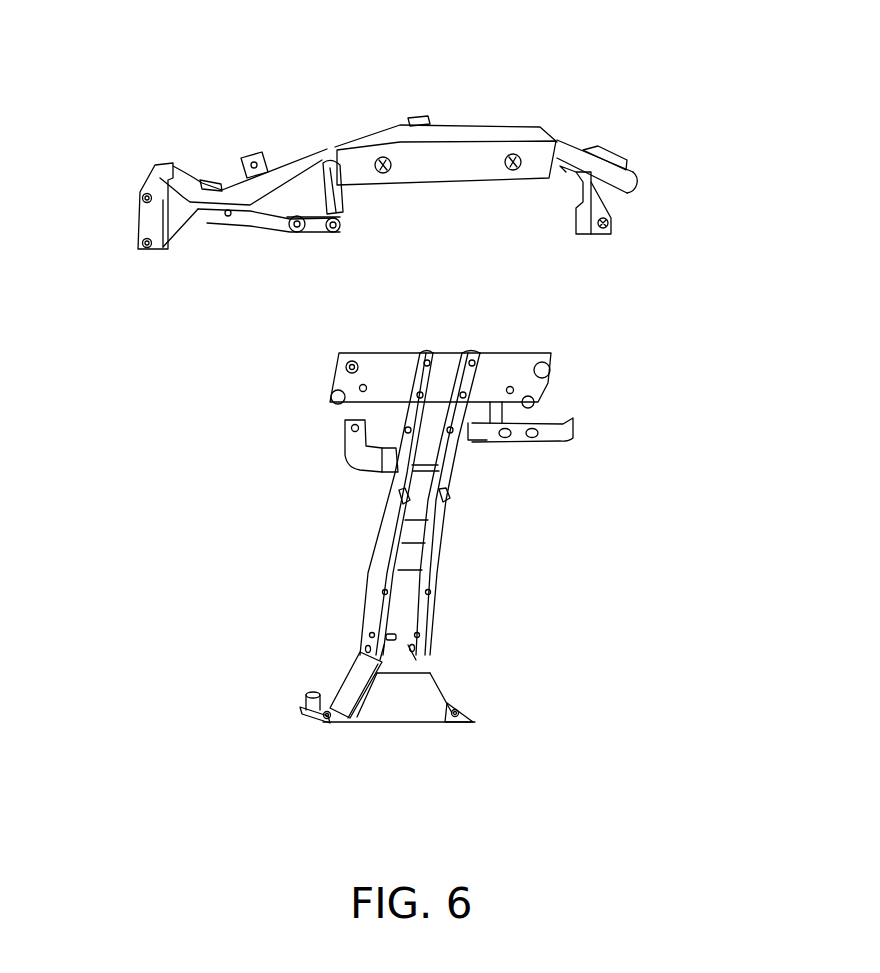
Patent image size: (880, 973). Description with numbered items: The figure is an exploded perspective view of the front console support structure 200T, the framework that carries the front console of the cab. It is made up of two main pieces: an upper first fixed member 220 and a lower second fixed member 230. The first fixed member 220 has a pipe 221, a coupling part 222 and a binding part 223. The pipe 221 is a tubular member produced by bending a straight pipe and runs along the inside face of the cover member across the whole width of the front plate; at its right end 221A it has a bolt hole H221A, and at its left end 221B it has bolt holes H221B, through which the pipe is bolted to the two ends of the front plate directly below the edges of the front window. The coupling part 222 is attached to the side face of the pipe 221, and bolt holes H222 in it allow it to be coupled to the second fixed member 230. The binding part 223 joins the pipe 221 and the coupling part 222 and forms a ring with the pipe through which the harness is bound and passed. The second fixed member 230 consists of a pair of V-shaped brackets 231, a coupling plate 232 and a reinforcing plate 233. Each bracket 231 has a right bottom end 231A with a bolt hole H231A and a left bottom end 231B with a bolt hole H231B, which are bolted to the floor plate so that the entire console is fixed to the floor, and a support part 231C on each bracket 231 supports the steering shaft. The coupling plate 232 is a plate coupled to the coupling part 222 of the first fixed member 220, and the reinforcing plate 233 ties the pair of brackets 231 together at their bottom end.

The front console support structure 200T is at (122, 32).
The first fixed member 220 is at (712, 170).
The pipe 221 is at (296, 166).
The right end 221A is at (583, 240).
The left end 221B is at (160, 250).
The bolt hole H221A is at (614, 226).
The bolt holes H221B is at (142, 242).
The coupling part 222 is at (450, 180).
The mounting holes of bar H222 is at (510, 153).
The binding part 223 is at (268, 232).
The second fixed member 230 is at (683, 400).
The pair of brackets 231 is at (422, 566).
The right bottom end 231A is at (475, 722).
The left bottom end 231B is at (300, 715).
The support part 231C is at (401, 496).
The bolt hole H231A is at (459, 728).
The bolt hole H231B is at (330, 728).
The coupling plate 232 is at (335, 380).
The reinforcing plate 233 is at (350, 672).